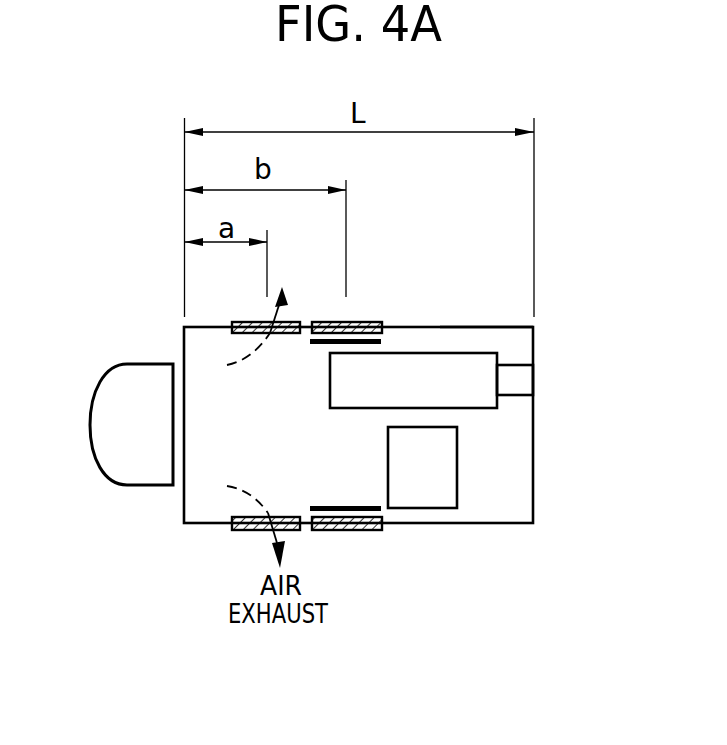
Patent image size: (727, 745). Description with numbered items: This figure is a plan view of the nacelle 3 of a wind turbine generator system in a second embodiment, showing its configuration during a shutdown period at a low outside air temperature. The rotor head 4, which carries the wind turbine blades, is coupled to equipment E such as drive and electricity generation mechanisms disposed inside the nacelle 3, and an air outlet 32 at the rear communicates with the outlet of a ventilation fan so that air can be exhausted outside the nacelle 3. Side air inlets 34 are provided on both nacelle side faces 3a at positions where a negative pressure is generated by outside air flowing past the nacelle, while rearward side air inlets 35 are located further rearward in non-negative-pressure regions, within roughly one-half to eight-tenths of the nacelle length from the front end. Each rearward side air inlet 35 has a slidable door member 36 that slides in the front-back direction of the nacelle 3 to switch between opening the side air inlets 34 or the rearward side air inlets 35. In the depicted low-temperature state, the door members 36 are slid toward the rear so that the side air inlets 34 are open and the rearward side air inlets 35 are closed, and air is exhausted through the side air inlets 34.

The nacelle 3 is at (497, 527).
The nacelle side face 3a is at (497, 326).
The rotor head 4 is at (90, 425).
The air outlet 32 is at (534, 380).
The side air inlet 34 is at (251, 321).
The rearward side air inlet 35 is at (352, 321).
The slidable door member 36 is at (318, 345).
The equipment E is at (435, 352).